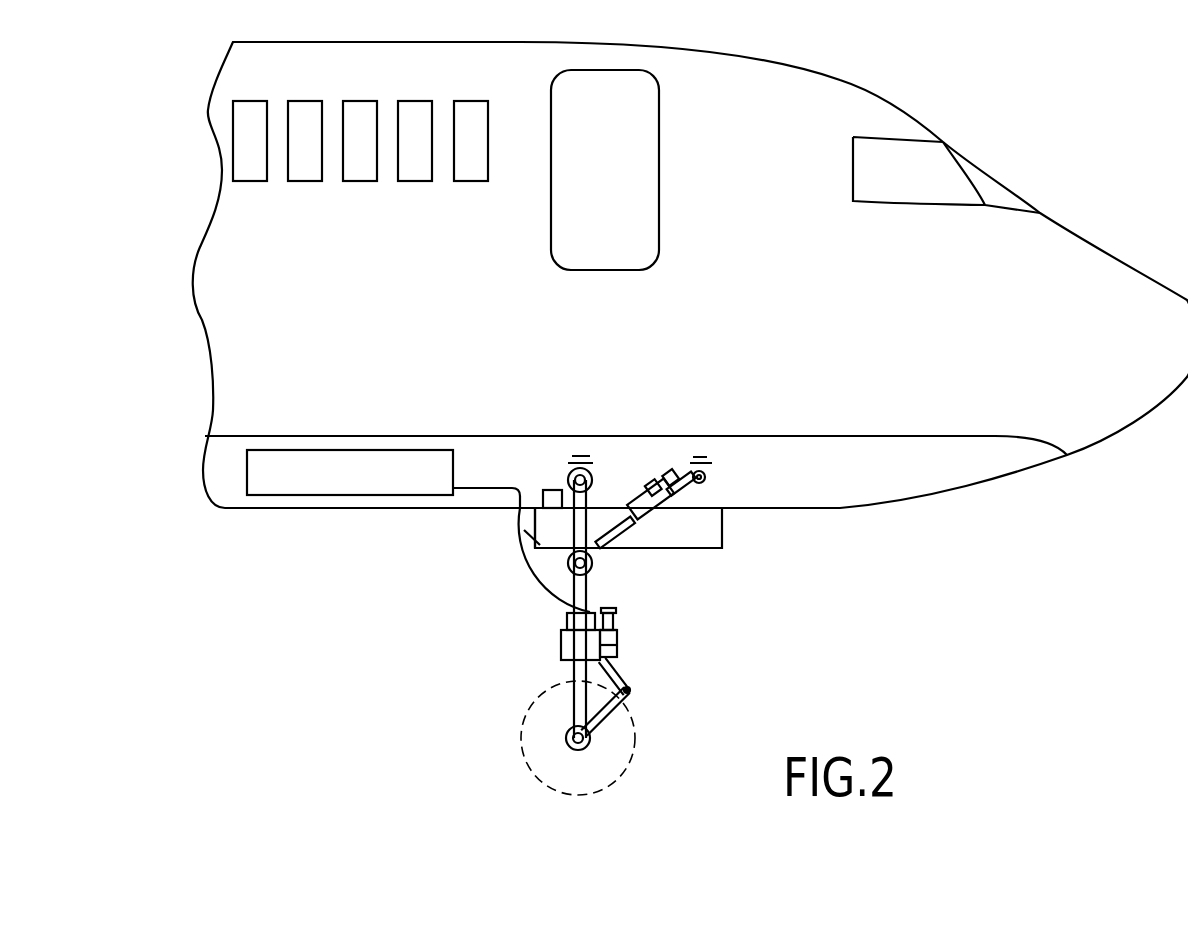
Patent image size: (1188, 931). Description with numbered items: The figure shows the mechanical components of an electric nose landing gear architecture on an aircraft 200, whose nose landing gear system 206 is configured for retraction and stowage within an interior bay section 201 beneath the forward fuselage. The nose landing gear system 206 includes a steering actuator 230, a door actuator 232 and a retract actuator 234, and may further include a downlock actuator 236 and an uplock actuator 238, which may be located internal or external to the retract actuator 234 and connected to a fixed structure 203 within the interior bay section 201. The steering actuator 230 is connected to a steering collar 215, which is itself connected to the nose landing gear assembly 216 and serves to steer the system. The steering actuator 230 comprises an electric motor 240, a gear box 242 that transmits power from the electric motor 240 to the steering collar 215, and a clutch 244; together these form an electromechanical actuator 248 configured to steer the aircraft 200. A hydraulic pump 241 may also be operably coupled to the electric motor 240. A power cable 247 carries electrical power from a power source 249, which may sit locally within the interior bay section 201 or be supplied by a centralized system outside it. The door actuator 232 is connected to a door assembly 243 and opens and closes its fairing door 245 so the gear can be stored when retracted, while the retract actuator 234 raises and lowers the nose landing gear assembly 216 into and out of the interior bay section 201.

The aircraft 200 is at (1070, 154).
The interior bay section 201 is at (795, 445).
The fixed structure 203 is at (580, 452).
The nose landing gear system 206 is at (812, 582).
The steering collar 215 is at (572, 645).
The nose landing gear assembly 216 is at (548, 612).
The steering actuator 230 is at (636, 643).
The door actuator 232 is at (543, 484).
The retract actuator 234 is at (668, 528).
The downlock actuator 236 is at (647, 488).
The uplock actuator 238 is at (670, 470).
The electric motor 240 is at (617, 615).
The hydraulic pump 241 is at (608, 606).
The gear box 242 is at (610, 650).
The door assembly 243 is at (542, 514).
The clutch 244 is at (618, 655).
The fairing door 245 is at (547, 538).
The power cable 247 is at (553, 593).
The electromechanical actuator 248 is at (636, 627).
The power source 249 is at (247, 472).